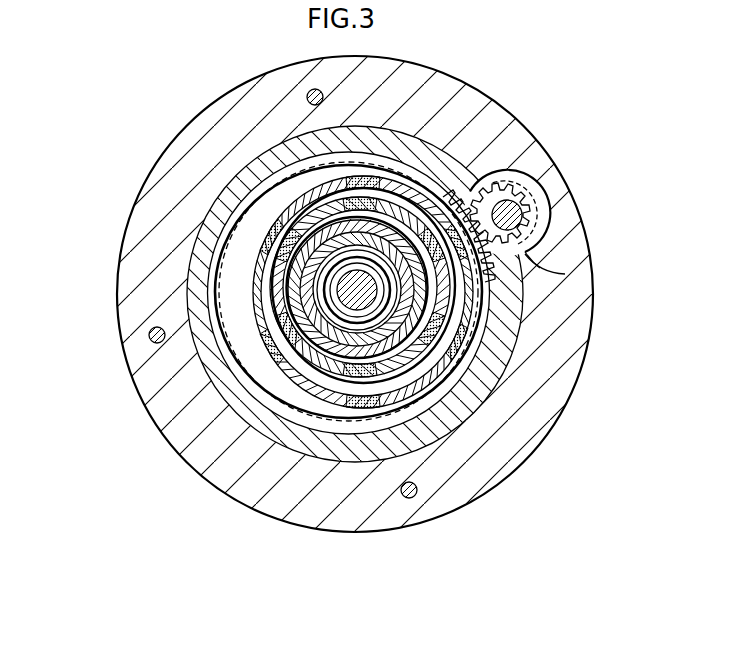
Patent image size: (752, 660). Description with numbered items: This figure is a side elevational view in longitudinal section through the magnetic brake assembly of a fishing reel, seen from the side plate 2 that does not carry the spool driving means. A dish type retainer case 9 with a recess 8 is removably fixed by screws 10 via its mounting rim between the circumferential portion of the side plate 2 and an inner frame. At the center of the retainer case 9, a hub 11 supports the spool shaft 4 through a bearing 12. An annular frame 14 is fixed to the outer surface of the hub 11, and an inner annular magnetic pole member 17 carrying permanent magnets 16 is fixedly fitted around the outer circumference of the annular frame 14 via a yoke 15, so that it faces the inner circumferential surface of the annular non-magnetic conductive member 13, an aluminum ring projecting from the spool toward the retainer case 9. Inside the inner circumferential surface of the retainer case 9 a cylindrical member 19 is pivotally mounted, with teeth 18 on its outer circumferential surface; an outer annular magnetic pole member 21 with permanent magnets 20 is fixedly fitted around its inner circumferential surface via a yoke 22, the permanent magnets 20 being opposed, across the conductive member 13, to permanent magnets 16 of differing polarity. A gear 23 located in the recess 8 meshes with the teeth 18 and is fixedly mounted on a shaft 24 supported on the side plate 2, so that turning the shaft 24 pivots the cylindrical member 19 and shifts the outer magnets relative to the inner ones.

The side plate 2 is at (260, 500).
The spool shaft 4 is at (333, 303).
The recess 8 is at (462, 185).
The retainer case 9 is at (223, 200).
The screws 10 is at (411, 499).
The hub 11 is at (275, 200).
The bearing 12 is at (262, 240).
The annular non-magnetic conductive member 13 is at (470, 193).
The annular frame 14 is at (318, 227).
The yoke 15 is at (313, 240).
The permanent magnets 16 is at (390, 213).
The inner annular magnetic pole member 17 is at (437, 203).
The teeth 18 is at (488, 278).
The cylindrical member 19 is at (565, 274).
The permanent magnets 20 is at (460, 353).
The outer annular magnetic pole member 21 is at (437, 390).
The yoke 22 is at (340, 425).
The gear 23 is at (525, 256).
The shaft 24 is at (514, 196).